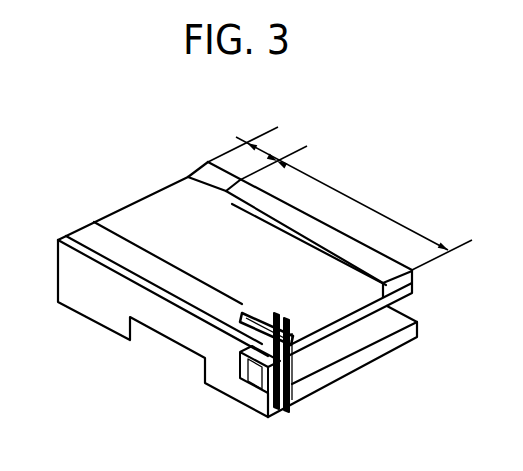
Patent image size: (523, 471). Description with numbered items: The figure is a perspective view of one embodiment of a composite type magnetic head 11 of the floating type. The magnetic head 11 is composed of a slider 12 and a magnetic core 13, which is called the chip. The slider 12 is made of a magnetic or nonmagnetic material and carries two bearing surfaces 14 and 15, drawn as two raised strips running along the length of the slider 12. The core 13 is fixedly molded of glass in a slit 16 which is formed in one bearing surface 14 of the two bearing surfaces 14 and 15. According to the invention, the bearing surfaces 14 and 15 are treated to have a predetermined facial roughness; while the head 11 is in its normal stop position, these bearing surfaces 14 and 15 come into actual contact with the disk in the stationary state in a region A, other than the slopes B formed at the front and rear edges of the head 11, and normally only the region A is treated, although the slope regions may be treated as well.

The composite type magnetic head 11 is at (421, 235).
The slider 12 is at (121, 209).
The magnetic core 13 is at (286, 380).
The bearing surface 14 is at (124, 250).
The bearing surface 15 is at (278, 216).
The slit 16 is at (242, 314).